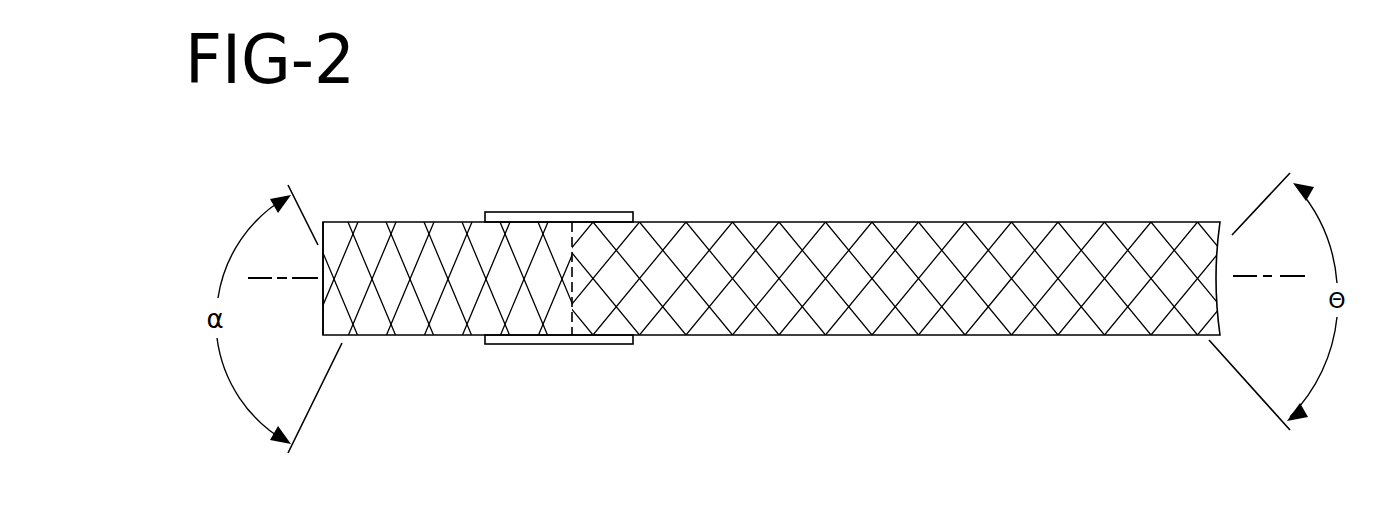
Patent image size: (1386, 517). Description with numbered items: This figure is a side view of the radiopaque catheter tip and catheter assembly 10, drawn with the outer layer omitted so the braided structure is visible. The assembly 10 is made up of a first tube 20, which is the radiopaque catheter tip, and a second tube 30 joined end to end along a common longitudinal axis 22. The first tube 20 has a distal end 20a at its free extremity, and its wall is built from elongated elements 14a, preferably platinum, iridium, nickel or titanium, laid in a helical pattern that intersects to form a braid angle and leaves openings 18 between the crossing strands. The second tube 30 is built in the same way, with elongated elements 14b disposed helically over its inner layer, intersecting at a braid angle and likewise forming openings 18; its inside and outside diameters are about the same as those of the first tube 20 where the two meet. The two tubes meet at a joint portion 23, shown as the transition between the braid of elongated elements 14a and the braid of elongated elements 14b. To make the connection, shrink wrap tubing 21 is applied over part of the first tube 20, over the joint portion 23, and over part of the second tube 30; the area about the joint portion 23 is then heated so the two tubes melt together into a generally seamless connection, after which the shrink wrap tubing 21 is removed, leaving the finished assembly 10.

The radiopaque catheter tip and catheter assembly 10 is at (317, 423).
The elongated elements 14a is at (358, 306).
The elongated elements 14b is at (797, 322).
The openings 18 is at (427, 283).
The first tube 20 is at (573, 143).
The distal end 20a is at (323, 222).
The shrink wrap tubing 21 is at (620, 212).
The longitudinal axis 22 is at (1268, 276).
The joint portion 23 is at (570, 316).
The second tube 30 is at (578, 143).